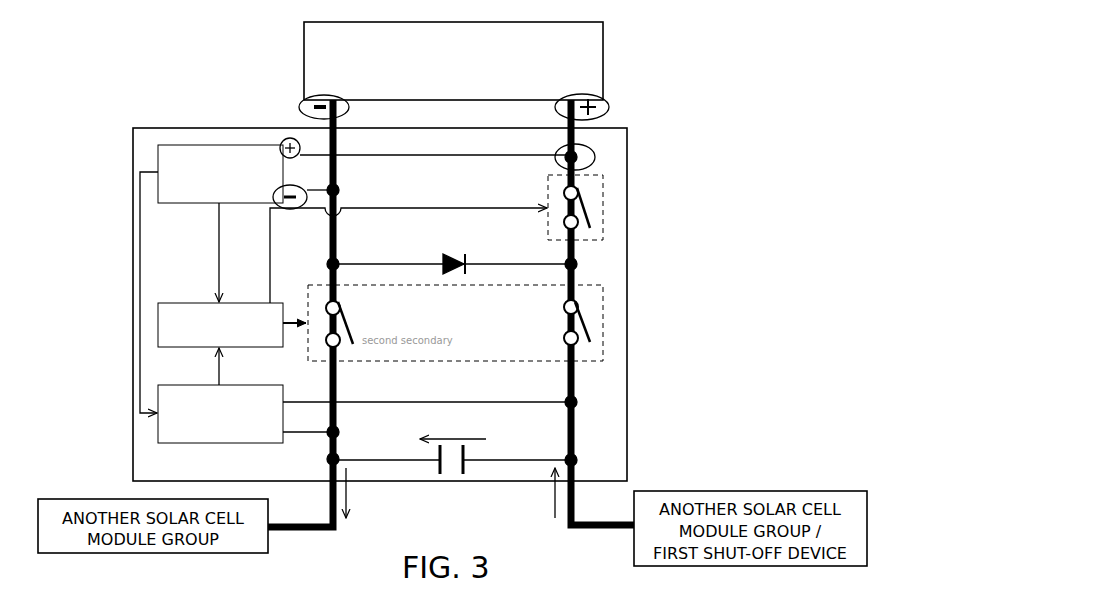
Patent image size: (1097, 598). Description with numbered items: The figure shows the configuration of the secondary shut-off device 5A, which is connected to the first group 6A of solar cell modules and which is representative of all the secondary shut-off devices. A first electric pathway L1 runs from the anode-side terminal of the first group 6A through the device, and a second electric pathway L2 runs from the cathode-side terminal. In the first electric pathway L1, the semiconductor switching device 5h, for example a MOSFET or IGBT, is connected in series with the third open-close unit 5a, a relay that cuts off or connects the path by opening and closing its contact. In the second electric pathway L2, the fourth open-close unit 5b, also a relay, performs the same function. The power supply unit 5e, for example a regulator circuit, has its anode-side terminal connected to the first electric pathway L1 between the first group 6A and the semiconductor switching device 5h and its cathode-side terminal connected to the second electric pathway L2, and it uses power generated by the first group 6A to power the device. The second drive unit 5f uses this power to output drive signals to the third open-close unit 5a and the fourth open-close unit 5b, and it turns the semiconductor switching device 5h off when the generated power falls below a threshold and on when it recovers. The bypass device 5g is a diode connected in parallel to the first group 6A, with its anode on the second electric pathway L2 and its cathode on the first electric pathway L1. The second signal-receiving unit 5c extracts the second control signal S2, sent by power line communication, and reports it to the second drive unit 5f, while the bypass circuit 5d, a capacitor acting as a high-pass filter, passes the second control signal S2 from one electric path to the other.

The secondary shut-off device 5A is at (680, 160).
The first group 6A is at (604, 63).
The third open-close unit 5a is at (592, 320).
The fourth open-close unit 5b is at (353, 322).
The second signal-receiving unit 5c is at (158, 432).
The bypass circuit 5d is at (471, 468).
The power supply unit 5e is at (158, 163).
The second drive unit 5f is at (158, 323).
The bypass device 5g is at (442, 259).
The semiconductor switching device 5h is at (595, 208).
The first electric pathway L1 is at (578, 405).
The second electric pathway L2 is at (340, 410).
The second control signal S2 is at (450, 470).